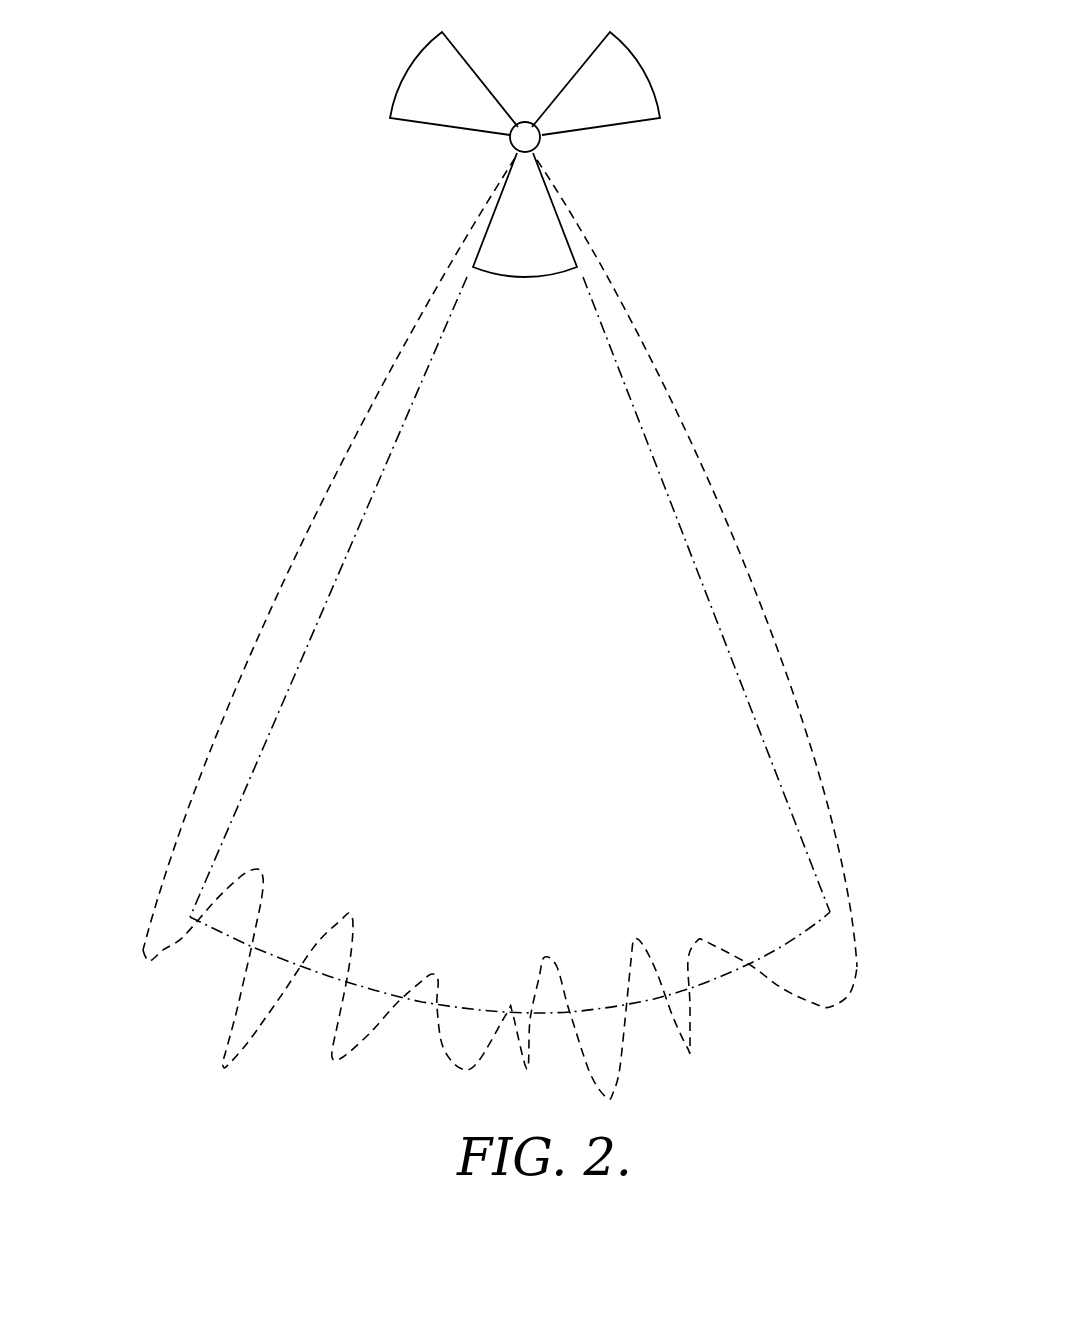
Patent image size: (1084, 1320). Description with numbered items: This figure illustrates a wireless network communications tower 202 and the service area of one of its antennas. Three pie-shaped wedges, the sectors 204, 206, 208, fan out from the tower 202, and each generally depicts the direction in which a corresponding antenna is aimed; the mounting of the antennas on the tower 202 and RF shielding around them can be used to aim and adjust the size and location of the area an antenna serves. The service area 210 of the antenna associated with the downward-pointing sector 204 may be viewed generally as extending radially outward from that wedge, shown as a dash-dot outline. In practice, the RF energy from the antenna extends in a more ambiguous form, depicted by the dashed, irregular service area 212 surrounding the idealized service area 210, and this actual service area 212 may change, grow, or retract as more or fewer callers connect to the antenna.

The wireless network communications tower 202 is at (524, 122).
The sector 204 is at (561, 225).
The sector 206 is at (654, 95).
The sector 208 is at (408, 72).
The service area 210 is at (666, 497).
The service area 212 is at (667, 389).